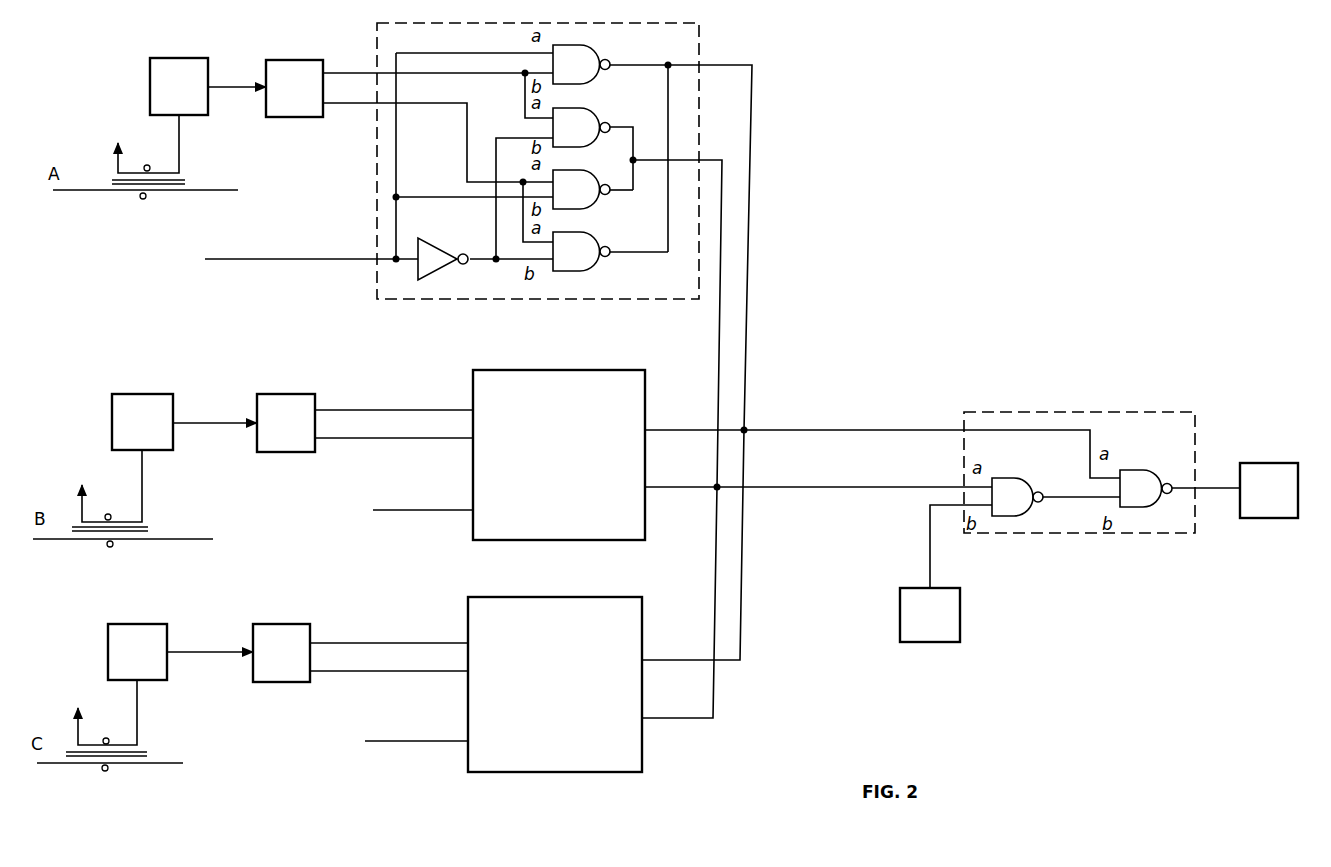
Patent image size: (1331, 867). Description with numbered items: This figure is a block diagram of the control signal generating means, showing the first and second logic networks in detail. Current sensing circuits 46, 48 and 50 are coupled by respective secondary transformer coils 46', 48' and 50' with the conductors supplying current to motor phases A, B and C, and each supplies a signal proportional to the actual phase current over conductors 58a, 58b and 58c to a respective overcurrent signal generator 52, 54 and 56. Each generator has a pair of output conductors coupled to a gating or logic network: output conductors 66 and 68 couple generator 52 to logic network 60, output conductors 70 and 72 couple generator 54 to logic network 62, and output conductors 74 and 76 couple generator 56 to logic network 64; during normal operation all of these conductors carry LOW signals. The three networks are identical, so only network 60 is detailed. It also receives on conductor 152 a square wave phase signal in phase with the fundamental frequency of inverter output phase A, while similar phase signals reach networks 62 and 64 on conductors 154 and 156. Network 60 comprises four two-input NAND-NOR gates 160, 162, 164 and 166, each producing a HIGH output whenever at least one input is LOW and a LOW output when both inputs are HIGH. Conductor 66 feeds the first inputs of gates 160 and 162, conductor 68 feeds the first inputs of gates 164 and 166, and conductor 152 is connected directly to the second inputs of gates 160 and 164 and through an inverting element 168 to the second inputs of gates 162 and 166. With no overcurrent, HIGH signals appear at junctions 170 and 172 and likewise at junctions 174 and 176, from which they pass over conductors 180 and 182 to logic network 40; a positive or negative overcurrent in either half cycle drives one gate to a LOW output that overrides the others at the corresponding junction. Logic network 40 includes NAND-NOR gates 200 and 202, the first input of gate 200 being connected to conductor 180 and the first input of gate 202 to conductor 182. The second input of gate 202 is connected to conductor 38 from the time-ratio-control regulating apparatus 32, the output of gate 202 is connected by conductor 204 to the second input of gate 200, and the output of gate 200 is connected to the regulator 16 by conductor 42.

The regulator 16 is at (1258, 499).
The time-ratio-control regulating apparatus 32 is at (919, 626).
The conductor 38 is at (930, 541).
The logic network 40 is at (1106, 412).
The conductor 42 is at (1214, 485).
The current sensing circuit 46 is at (179, 86).
The secondary transformer coil 46' is at (145, 157).
The current sensing circuit 48 is at (142, 422).
The secondary transformer coil 48' is at (123, 498).
The current sensing circuit 50 is at (137, 652).
The secondary transformer coil 50' is at (110, 725).
The overcurrent signal generator 52 is at (283, 99).
The overcurrent signal generator 54 is at (275, 433).
The overcurrent signal generator 56 is at (270, 663).
The conductor 58a is at (234, 81).
The conductor 58b is at (202, 422).
The conductor 58c is at (200, 648).
The logic network 60 is at (700, 24).
The logic network 62 is at (548, 456).
The logic network 64 is at (537, 696).
The output conductor 66 is at (346, 69).
The output conductor 68 is at (350, 110).
The output conductor 70 is at (363, 409).
The output conductor 72 is at (376, 440).
The output conductor 74 is at (360, 642).
The output conductor 76 is at (368, 673).
The conductor 152 is at (309, 259).
The conductor 154 is at (418, 496).
The conductor 156 is at (412, 729).
The NAND-NOR gate 160 is at (596, 46).
The NAND-NOR gate 162 is at (598, 108).
The NAND-NOR gate 164 is at (596, 172).
The NAND-NOR gate 166 is at (589, 236).
The inverting element 168 is at (436, 243).
The junction 170 is at (670, 64).
The junction 172 is at (634, 158).
The junction 174 is at (746, 428).
The junction 176 is at (716, 490).
The conductor 180 is at (848, 429).
The conductor 182 is at (797, 486).
The NAND-NOR gate 200 is at (1146, 472).
The NAND-NOR gate 202 is at (1022, 478).
The conductor 204 is at (1072, 500).